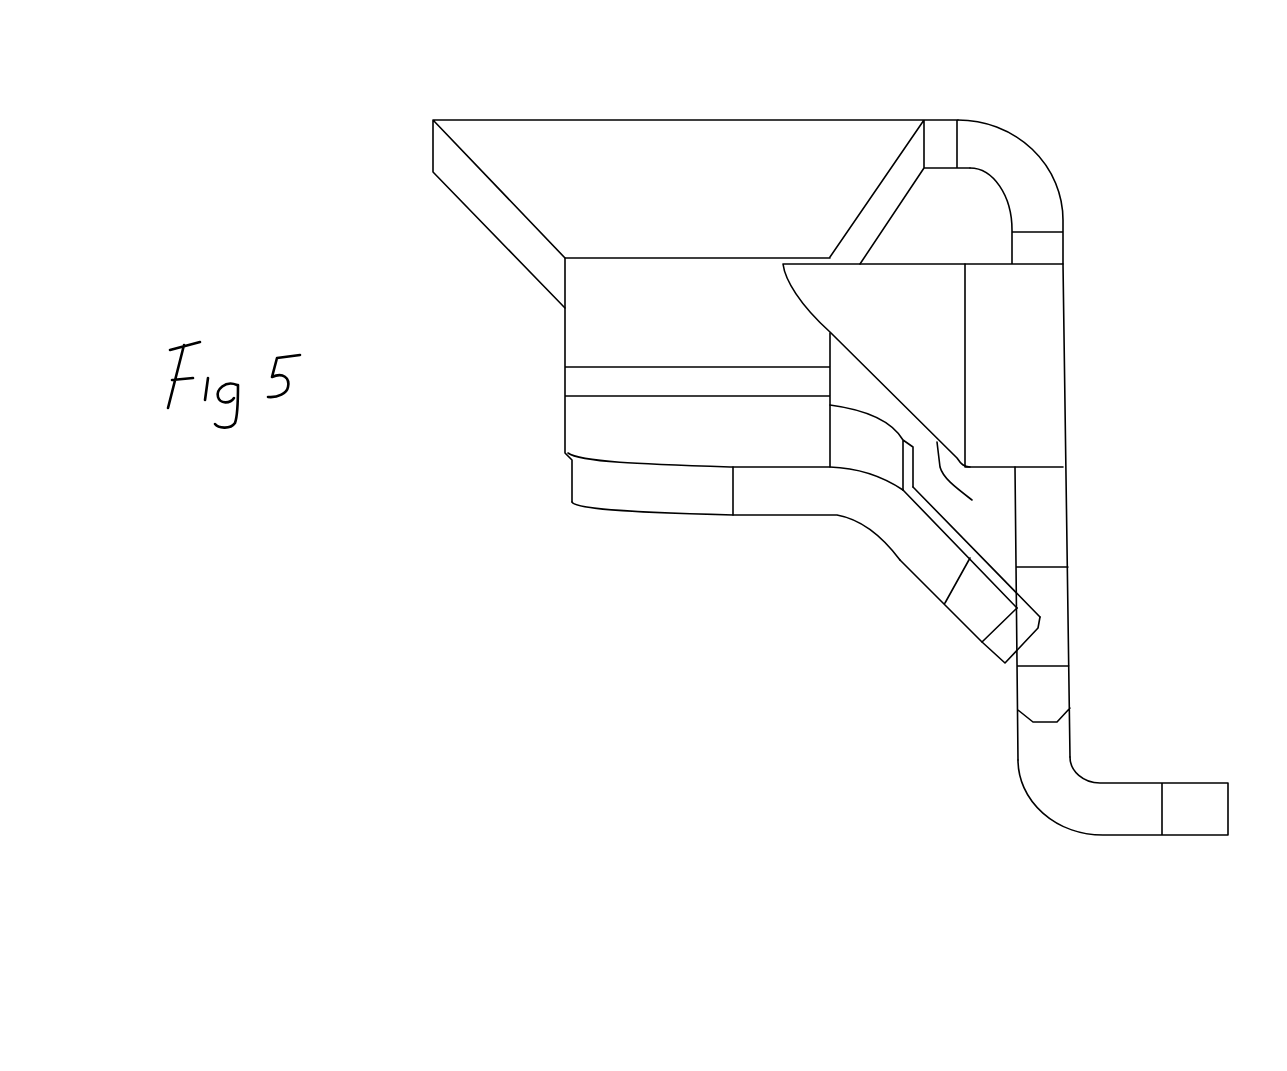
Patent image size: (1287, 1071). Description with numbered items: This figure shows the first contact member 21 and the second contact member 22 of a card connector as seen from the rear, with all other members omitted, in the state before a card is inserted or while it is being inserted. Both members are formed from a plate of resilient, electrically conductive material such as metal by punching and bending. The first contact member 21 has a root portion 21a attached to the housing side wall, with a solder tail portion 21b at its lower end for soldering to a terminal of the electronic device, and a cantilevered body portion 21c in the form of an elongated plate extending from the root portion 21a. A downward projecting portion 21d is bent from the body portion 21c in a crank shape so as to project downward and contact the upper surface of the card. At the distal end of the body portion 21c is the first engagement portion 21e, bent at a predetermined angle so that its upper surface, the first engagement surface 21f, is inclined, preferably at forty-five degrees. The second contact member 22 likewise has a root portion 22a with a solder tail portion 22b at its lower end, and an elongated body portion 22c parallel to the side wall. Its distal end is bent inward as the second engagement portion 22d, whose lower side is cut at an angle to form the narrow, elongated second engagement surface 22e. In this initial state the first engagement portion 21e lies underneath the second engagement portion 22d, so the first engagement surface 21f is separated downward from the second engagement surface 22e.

The first contact member 21 is at (836, 99).
The root portion 21a is at (1112, 512).
The solder tail portion 21b is at (1138, 775).
The body portion 21c is at (695, 143).
The downward projecting portion 21d is at (707, 318).
The first engagement portion 21e is at (932, 573).
The first engagement surface 21f is at (943, 611).
The second contact member 22 is at (1098, 420).
The root portion 22a is at (1070, 543).
The solder tail portion 22b is at (1093, 780).
The body portion 22c is at (1013, 395).
The second engagement portion 22d is at (901, 355).
The second engagement surface 22e is at (971, 482).